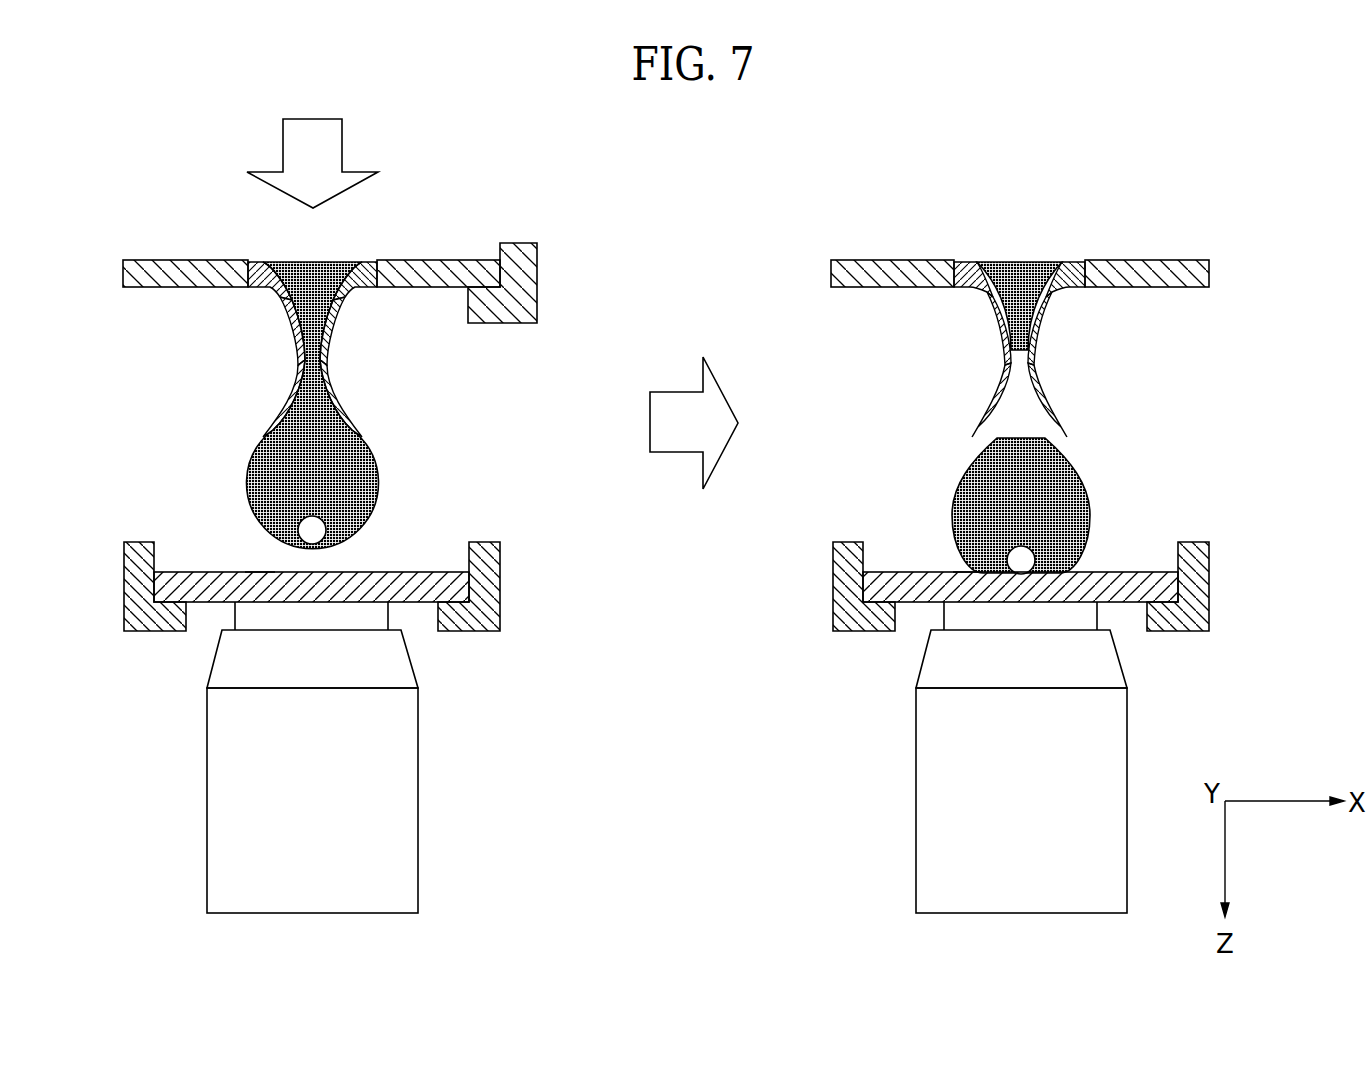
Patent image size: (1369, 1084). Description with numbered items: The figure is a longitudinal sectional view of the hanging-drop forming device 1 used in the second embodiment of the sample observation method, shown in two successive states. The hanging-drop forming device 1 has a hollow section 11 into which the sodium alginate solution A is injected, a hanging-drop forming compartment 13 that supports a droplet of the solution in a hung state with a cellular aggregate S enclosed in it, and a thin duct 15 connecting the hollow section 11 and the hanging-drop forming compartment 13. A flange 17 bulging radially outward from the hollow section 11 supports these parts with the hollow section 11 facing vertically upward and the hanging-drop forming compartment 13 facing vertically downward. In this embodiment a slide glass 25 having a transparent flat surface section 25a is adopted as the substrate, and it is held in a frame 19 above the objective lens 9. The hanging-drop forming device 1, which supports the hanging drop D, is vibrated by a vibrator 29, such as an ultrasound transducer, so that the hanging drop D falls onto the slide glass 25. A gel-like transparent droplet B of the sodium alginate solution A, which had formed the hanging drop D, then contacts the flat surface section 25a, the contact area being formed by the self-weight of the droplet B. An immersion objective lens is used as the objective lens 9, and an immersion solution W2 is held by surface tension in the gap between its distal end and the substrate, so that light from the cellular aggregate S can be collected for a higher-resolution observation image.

The hanging-drop forming device 1 is at (183, 230).
The hollow section 11 is at (258, 262).
The hanging-drop forming compartment 13 is at (280, 398).
The thin duct 15 is at (297, 352).
The flange 17 is at (442, 265).
The holding frame 19 is at (520, 579).
The slide glass 25 is at (175, 550).
The flat surface section 25a is at (260, 572).
The vibrator 29 is at (528, 285).
The objective lens 9 is at (182, 777).
The immersion solution W2 is at (247, 613).
The sodium alginate solution A is at (355, 465).
The droplet B is at (1106, 501).
The hanging drop D is at (403, 492).
The cellular aggregate S is at (316, 532).